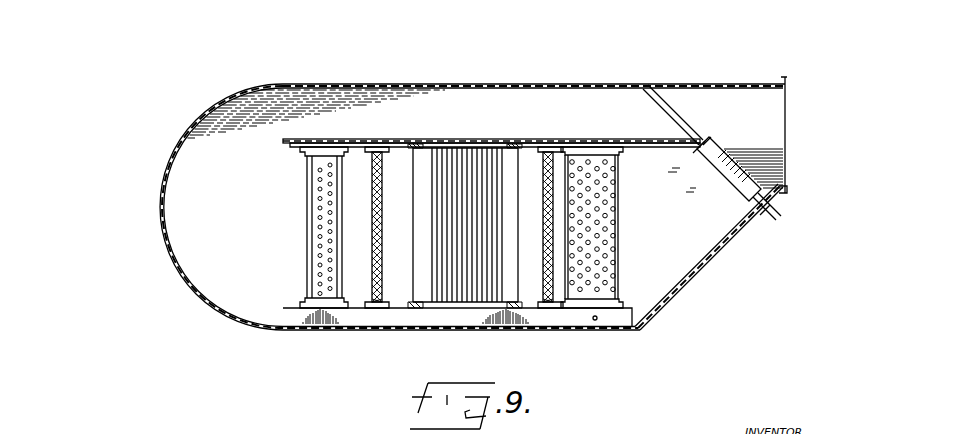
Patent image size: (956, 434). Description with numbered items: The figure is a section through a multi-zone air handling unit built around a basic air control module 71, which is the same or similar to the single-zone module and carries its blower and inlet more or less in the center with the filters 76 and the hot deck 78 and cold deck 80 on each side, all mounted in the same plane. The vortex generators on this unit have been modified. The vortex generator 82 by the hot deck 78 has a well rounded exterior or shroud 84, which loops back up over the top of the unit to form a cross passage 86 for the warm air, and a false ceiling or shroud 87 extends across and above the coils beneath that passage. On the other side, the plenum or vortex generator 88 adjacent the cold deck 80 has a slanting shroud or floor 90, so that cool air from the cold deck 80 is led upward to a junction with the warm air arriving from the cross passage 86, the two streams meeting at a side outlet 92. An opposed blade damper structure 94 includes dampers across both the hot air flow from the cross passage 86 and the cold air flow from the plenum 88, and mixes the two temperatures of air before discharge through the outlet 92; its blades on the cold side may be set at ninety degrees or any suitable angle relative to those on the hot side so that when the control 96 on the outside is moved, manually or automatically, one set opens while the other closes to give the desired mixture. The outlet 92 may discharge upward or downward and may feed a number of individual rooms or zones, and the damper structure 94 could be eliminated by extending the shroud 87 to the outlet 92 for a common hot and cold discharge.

The basic air control module 71 is at (290, 247).
The filters 76 is at (381, 233).
The hot deck 78 is at (320, 180).
The cold deck 80 is at (585, 293).
The vortex generator 82 is at (177, 222).
The shroud 84 is at (162, 172).
The cross passage 86 is at (493, 107).
The false ceiling or shroud 87 is at (415, 139).
The plenum or vortex generator 88 is at (690, 247).
The slanting shroud or floor 90 is at (676, 290).
The side outlet 92 is at (783, 137).
The opposed blade damper structure 94 is at (704, 166).
The control 96 is at (778, 218).